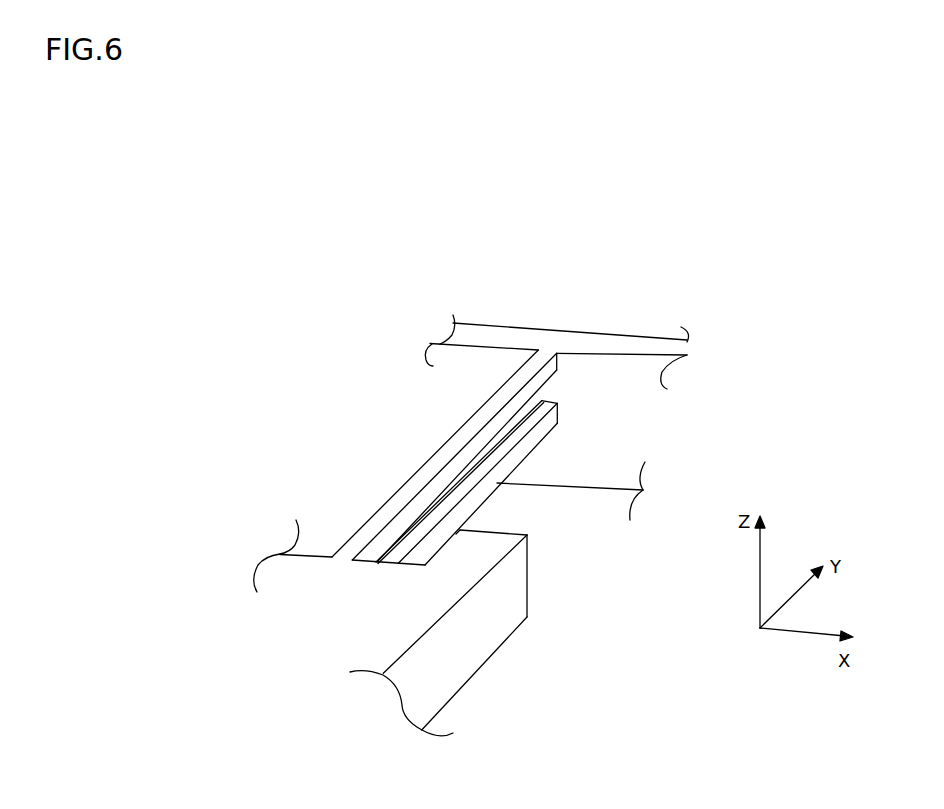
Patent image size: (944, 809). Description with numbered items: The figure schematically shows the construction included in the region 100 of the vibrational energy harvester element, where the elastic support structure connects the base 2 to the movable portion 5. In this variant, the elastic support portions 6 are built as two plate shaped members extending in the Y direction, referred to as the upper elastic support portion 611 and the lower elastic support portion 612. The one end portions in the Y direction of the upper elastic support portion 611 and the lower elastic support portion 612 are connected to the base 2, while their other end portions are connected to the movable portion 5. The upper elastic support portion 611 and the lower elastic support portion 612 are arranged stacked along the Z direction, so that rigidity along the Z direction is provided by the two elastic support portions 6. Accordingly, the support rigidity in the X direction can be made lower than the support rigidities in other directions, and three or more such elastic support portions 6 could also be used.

The region 100 is at (745, 284).
The base 2 is at (608, 350).
The movable portion 5 is at (485, 568).
The elastic support portions 6 is at (437, 388).
The upper elastic support portion 611 is at (473, 455).
The lower elastic support portion 612 is at (532, 422).